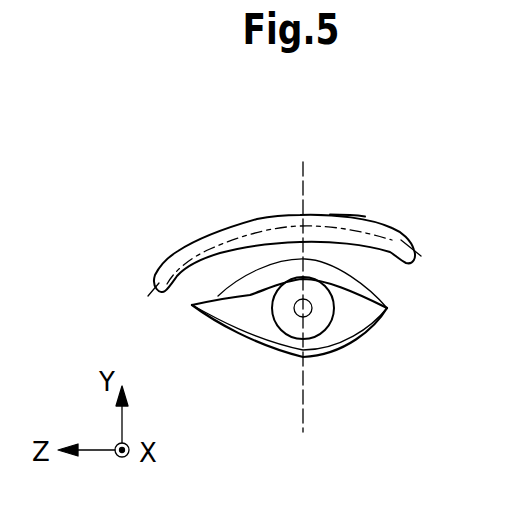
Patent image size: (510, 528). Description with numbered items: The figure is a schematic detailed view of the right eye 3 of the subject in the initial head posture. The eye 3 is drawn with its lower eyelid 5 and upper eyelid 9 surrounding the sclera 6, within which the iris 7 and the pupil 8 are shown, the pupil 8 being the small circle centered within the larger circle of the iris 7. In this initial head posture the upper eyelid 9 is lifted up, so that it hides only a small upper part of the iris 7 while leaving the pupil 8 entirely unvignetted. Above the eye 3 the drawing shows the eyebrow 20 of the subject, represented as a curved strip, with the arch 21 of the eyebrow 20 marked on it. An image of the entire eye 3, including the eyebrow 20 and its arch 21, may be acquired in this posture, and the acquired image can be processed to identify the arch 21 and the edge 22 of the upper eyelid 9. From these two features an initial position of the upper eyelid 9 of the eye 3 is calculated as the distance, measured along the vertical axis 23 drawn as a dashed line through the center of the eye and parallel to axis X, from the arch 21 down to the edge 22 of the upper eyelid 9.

The eye 3 is at (248, 208).
The eyebrow 20 is at (348, 215).
The arch 21 is at (392, 240).
The edge of the upper eyelid 22 is at (218, 296).
The vertical axis 23 is at (300, 178).
The upper eyelid 9 is at (362, 293).
The sclera 6 is at (237, 320).
The iris 7 is at (326, 320).
The lower eyelid 5 is at (322, 348).
The pupil 8 is at (298, 311).